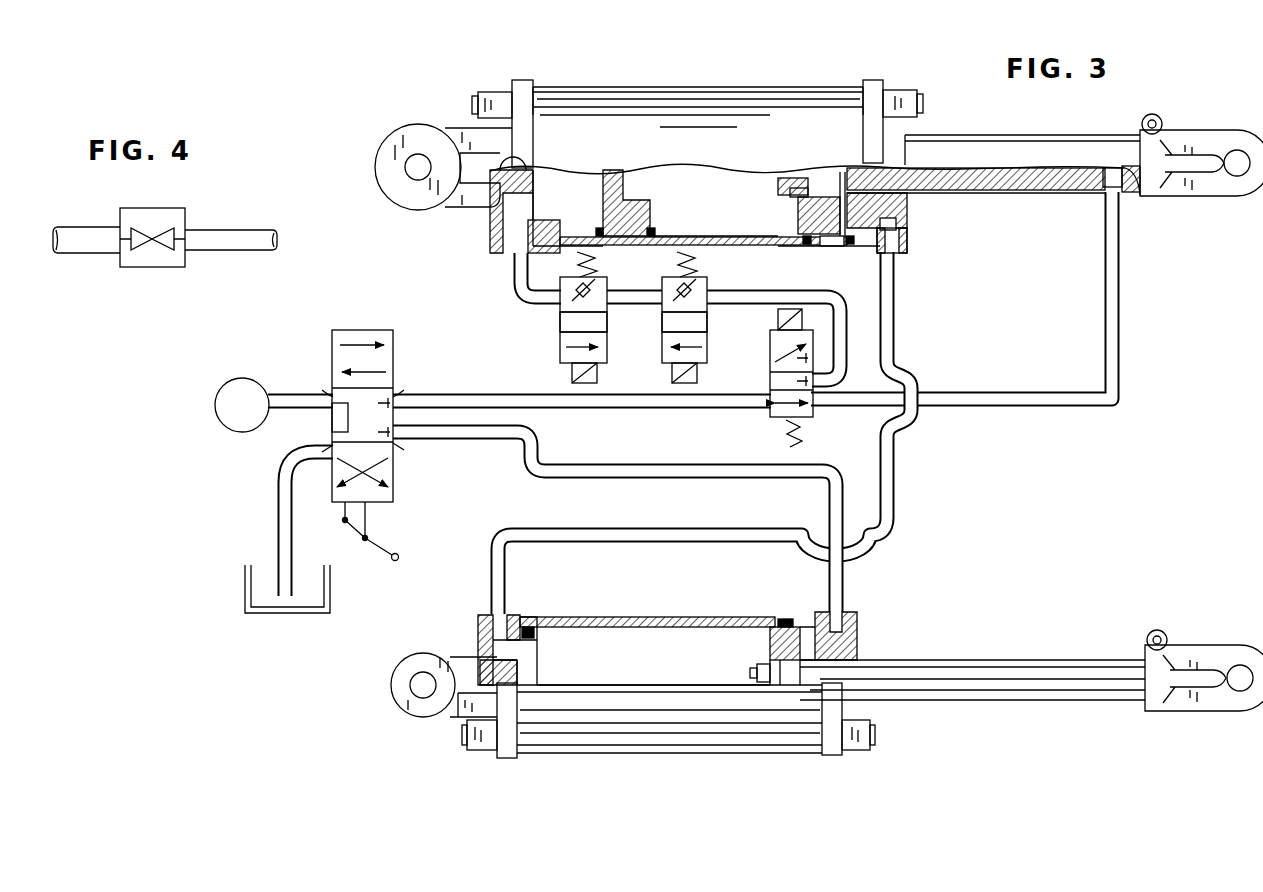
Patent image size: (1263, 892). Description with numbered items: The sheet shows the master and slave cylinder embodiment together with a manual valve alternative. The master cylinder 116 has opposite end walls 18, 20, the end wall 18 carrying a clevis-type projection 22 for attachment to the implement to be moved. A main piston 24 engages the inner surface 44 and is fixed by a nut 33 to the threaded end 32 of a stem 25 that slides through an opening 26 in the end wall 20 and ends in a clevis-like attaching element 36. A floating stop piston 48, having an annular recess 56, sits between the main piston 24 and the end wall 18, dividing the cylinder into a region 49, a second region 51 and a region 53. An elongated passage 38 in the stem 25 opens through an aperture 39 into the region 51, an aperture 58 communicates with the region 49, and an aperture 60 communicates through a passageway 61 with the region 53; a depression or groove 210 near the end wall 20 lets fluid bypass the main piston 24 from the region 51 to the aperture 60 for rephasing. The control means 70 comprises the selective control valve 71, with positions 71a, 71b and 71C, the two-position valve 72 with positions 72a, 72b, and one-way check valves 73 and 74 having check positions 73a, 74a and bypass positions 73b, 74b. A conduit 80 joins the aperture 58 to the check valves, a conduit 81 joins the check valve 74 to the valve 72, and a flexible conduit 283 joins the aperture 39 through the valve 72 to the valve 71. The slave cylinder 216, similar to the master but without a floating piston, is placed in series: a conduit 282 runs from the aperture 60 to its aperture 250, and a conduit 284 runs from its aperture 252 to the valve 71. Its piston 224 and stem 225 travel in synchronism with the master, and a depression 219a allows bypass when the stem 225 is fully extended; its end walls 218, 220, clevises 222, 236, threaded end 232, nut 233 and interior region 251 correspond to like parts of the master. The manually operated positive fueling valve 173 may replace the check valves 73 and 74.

In FIG. 3, the end wall 18 is at (518, 82).
In FIG. 3, the main cylinder 116 is at (680, 88).
In FIG. 3, the end wall 20 is at (875, 80).
In FIG. 3, the stem 25 is at (1010, 136).
In FIG. 3, the elongated passage 38 is at (1040, 168).
In FIG. 3, the clevis-like attaching element 36 is at (1228, 135).
In FIG. 3, the clevis-type projection 22 is at (405, 190).
In FIG. 3, the region 49 is at (584, 177).
In FIG. 3, the floating stop piston 48 is at (616, 177).
In FIG. 3, the annular recess 56 is at (645, 180).
In FIG. 3, the second region 51 is at (706, 177).
In FIG. 3, the region 53 is at (845, 177).
In FIG. 3, the opening 26 is at (872, 186).
In FIG. 3, the threaded end 32 is at (778, 182).
In FIG. 3, the nut 33 is at (790, 194).
In FIG. 3, the main piston 24 is at (800, 211).
In FIG. 3, the inner surface 44 is at (730, 237).
In FIG. 3, the passageway 61 is at (895, 214).
In FIG. 3, the aperture 60 is at (902, 240).
In FIG. 3, the depression or groove 210 is at (833, 246).
In FIG. 3, the aperture 39 is at (1100, 180).
In FIG. 3, the aperture 58 is at (492, 245).
In FIG. 3, the conduit 80 is at (512, 288).
In FIG. 4, the conduit 80 is at (95, 254).
In FIG. 3, the conduit 81 is at (847, 312).
In FIG. 4, the conduit 81 is at (250, 253).
In FIG. 3, the one-way check valve 73 is at (598, 278).
In FIG. 3, the check position 73a is at (562, 316).
In FIG. 3, the bypass condition 73b is at (562, 350).
In FIG. 3, the check valve 74 is at (705, 278).
In FIG. 3, the check position 74a is at (666, 316).
In FIG. 3, the bypass condition 74b is at (668, 348).
In FIG. 3, the valve 72 is at (776, 419).
In FIG. 3, the valve position 72a is at (771, 380).
In FIG. 3, the valve position 72b is at (774, 352).
In FIG. 3, the control means 70 is at (303, 350).
In FIG. 3, the selective control valve 71 is at (343, 330).
In FIG. 3, the valve position 71a is at (393, 354).
In FIG. 3, the valve position 71b is at (298, 445).
In FIG. 3, the valve position 71C is at (395, 480).
In FIG. 3, the conduit 283 is at (1040, 408).
In FIG. 3, the conduit 284 is at (690, 476).
In FIG. 3, the conduit 282 is at (897, 495).
In FIG. 3, the aperture 250 is at (530, 620).
In FIG. 3, the cylinder shell 251 is at (620, 633).
In FIG. 3, the depression 219a is at (785, 618).
In FIG. 3, the aperture 252 is at (857, 621).
In FIG. 3, the piston 224 is at (770, 645).
In FIG. 3, the seal 232 is at (758, 672).
In FIG. 3, the retaining ring 233 is at (770, 682).
In FIG. 3, the cylinder end clevis 222 is at (405, 712).
In FIG. 3, the mounting bracket 218 is at (503, 762).
In FIG. 3, the mounting bracket 220 is at (832, 757).
In FIG. 3, the slave cylinder 216 is at (660, 758).
In FIG. 3, the stem 225 is at (1010, 702).
In FIG. 3, the rod end clevis 236 is at (1226, 712).
In FIG. 4, the manually operated positive fueling valve 173 is at (150, 268).